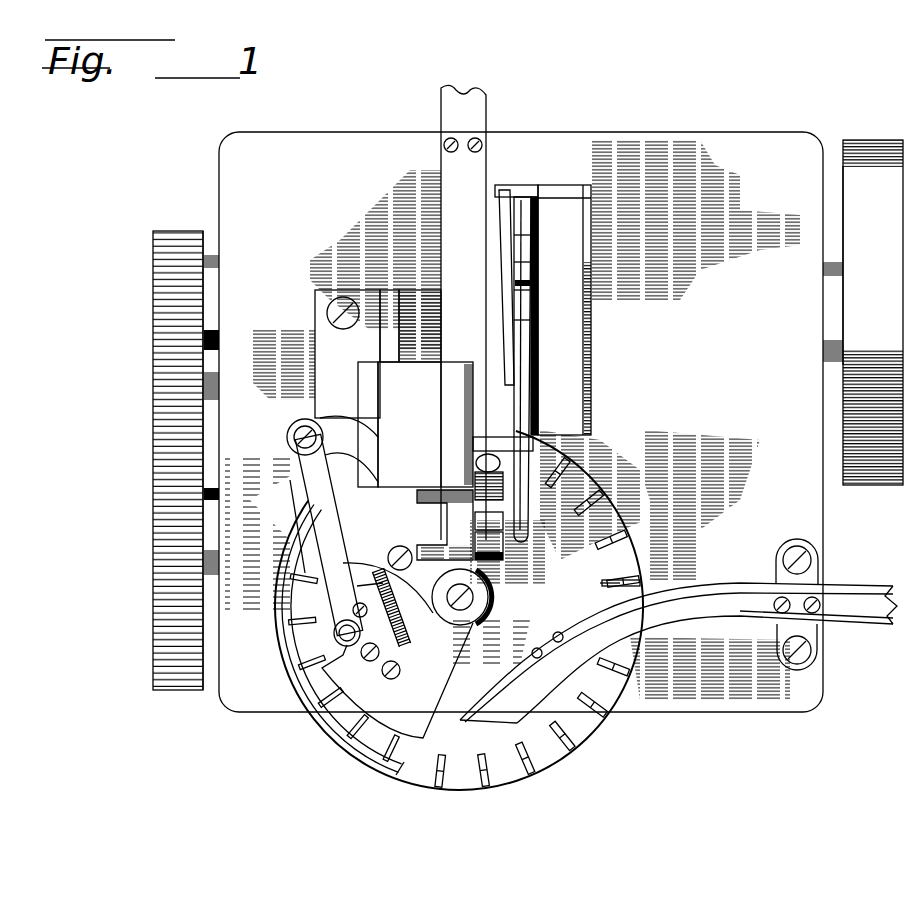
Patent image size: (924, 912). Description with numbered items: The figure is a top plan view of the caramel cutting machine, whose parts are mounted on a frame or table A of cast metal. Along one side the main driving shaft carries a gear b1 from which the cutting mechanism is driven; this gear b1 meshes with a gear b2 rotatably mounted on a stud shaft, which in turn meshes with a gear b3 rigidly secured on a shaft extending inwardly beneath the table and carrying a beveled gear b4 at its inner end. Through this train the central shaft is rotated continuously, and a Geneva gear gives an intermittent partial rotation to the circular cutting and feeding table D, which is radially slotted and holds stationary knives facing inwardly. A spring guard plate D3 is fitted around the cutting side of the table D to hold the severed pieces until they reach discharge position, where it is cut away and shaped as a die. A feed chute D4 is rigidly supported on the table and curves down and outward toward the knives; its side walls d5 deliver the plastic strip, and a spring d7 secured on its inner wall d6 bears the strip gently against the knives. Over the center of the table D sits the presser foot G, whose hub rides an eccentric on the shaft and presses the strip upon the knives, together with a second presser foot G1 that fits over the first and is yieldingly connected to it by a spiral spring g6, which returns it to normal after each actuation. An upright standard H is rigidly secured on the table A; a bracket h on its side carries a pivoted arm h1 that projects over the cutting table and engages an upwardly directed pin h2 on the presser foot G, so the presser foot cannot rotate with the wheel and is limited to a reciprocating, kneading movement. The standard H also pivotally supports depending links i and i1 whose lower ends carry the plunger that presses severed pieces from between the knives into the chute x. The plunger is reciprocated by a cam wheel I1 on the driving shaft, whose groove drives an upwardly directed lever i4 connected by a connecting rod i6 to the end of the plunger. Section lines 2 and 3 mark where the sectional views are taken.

The frame or table A is at (795, 535).
The chute x is at (455, 125).
The gear b1 is at (152, 264).
The gear b2 is at (156, 460).
The gear b3 is at (153, 553).
The beveled gear b4 is at (563, 534).
The driving wheel l is at (864, 308).
The bracket h is at (368, 394).
The arm h1 is at (323, 525).
The pin h2 is at (334, 634).
The standard H is at (394, 388).
The cam wheel I1 is at (560, 190).
The link i is at (465, 530).
The link i1 is at (493, 490).
The lever i4 is at (522, 185).
The connecting rod i6 is at (505, 185).
The presser foot G is at (397, 650).
The second presser foot G1 is at (428, 530).
The spiral spring g6 is at (365, 592).
The cutting and feeding table D is at (586, 735).
The spring guard plate D3 is at (343, 733).
The feed chute D4 is at (762, 610).
The side wall d5 is at (847, 628).
The inner wall d6 is at (873, 570).
The spring d7 is at (494, 688).
The section line 3— 3 is at (652, 140).
The section line 2— 2 is at (119, 685).